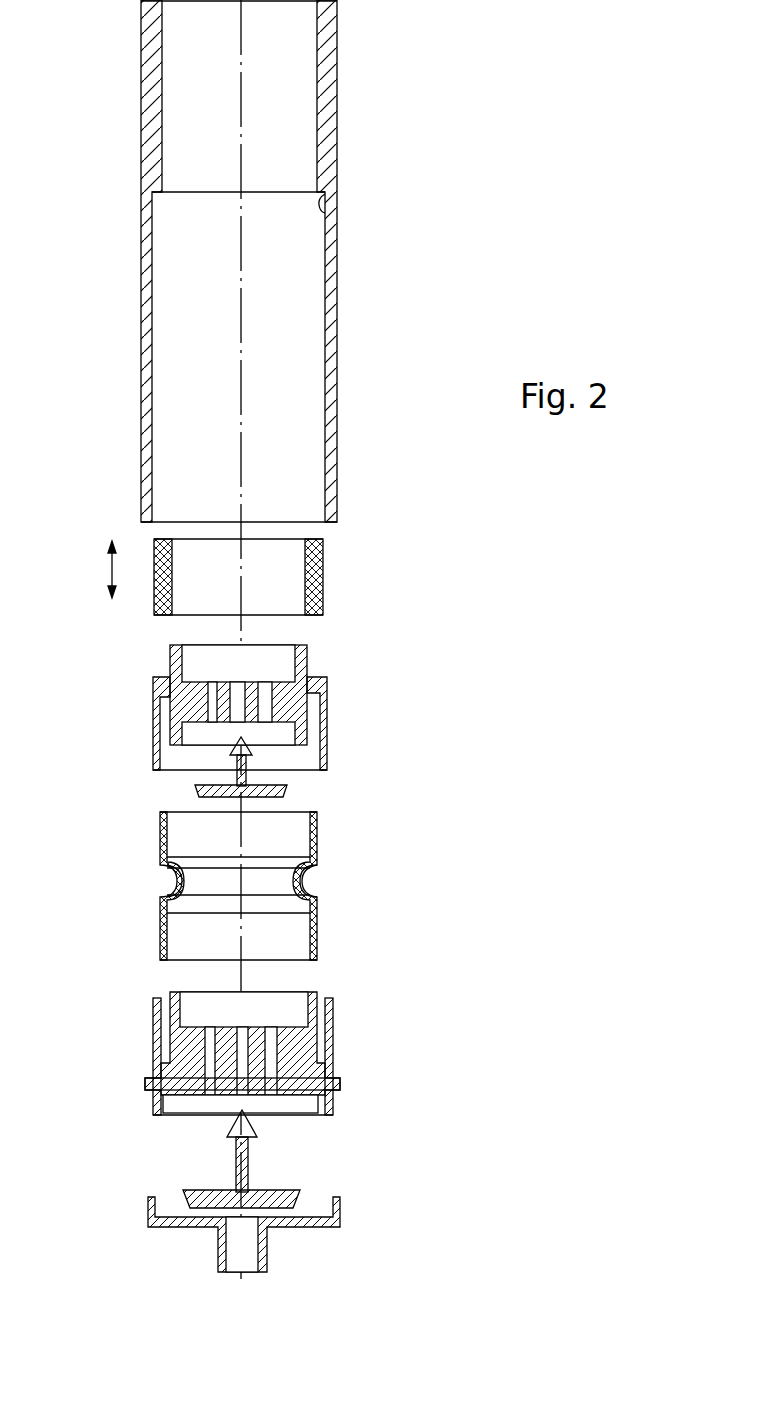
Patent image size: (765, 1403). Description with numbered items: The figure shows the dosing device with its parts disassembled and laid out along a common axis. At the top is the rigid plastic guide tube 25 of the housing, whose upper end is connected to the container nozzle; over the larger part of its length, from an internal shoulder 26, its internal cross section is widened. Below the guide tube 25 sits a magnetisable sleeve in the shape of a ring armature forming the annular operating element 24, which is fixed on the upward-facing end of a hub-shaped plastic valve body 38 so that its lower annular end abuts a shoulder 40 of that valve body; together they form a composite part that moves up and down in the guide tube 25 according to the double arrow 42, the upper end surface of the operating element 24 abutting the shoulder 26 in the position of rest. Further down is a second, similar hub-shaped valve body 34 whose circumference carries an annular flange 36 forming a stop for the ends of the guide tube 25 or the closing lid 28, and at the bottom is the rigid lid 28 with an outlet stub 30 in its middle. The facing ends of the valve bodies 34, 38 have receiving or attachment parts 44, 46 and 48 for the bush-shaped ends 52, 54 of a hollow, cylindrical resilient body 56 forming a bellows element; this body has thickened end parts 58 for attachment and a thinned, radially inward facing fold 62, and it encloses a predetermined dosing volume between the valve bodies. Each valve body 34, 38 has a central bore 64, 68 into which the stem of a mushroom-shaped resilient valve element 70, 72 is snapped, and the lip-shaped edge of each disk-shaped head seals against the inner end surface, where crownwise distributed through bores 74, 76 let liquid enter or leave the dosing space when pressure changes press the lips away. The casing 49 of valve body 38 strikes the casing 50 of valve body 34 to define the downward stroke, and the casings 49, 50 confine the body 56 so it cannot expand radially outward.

The operating element 24 is at (323, 567).
The guide tube 25 is at (330, 99).
The shoulder 26 is at (327, 210).
The lid 28 is at (283, 1228).
The outlet stub 30 is at (250, 1250).
The valve body 34 is at (237, 1052).
The annular flange 36 is at (340, 1082).
The valve body 38 is at (239, 669).
The shoulder 40 is at (223, 695).
The direction of movement 42 is at (103, 571).
The receiving or attachment part 44 is at (327, 729).
The receiving or attachment part 46 is at (323, 763).
The receiving or attachment part 48 is at (282, 1029).
The casing 49 is at (153, 736).
The casing 50 is at (333, 1030).
The bush-shaped end 52 is at (254, 886).
The bush-shaped end 54 is at (317, 942).
The hollow cylindrical body 56 is at (333, 910).
The thickened end part 58 is at (160, 835).
The fold 62 is at (180, 878).
The central bore 64 is at (240, 690).
The central bore 68 is at (238, 1027).
The valve element 70 is at (292, 800).
The valve element 72 is at (264, 1161).
The through bores 74 is at (210, 730).
The through bores 76 is at (270, 1030).